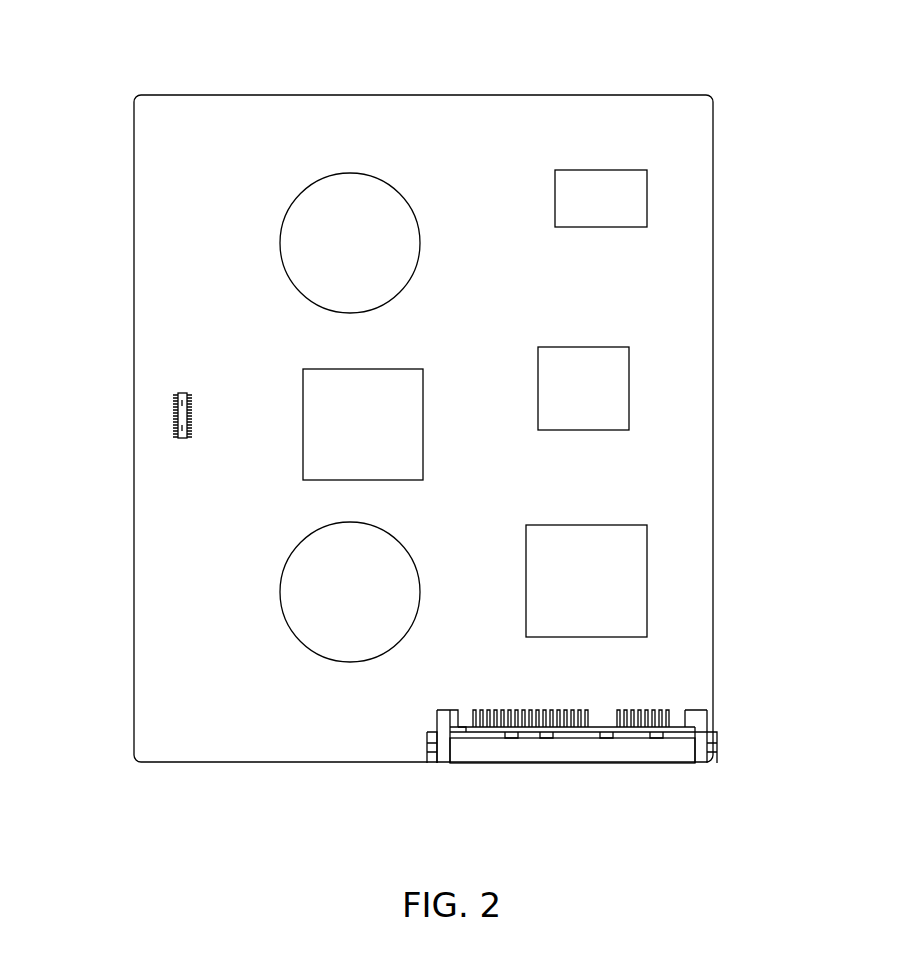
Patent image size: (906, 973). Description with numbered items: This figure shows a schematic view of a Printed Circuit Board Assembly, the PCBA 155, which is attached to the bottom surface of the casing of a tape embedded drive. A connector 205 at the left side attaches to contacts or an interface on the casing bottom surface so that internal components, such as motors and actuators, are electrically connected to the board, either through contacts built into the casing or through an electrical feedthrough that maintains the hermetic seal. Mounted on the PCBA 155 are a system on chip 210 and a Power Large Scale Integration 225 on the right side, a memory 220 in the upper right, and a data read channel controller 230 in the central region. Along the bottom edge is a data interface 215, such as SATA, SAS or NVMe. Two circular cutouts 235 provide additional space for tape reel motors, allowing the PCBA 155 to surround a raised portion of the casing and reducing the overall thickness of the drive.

The Printed Circuit Board Assembly (PCBA) 155 is at (682, 118).
The connector 205 is at (170, 405).
The system on chip (SoC) 210 is at (621, 581).
The data interface 215 is at (590, 773).
The memory 220 is at (628, 193).
The Power Large Scale Integration (PLSI) 225 is at (614, 375).
The data read channel controller 230 is at (300, 380).
The cutout 235 is at (302, 235).